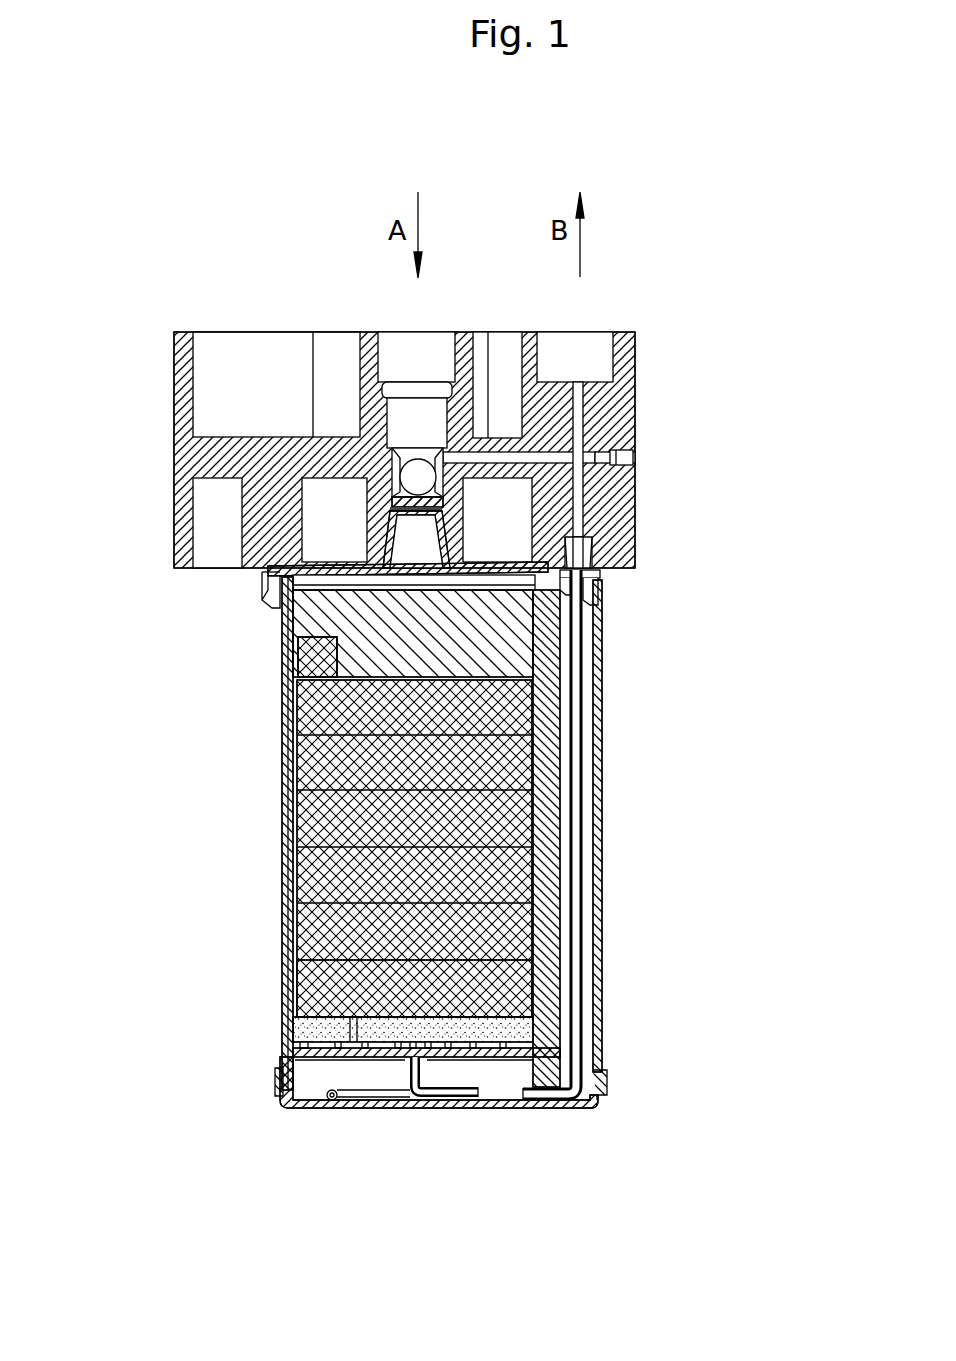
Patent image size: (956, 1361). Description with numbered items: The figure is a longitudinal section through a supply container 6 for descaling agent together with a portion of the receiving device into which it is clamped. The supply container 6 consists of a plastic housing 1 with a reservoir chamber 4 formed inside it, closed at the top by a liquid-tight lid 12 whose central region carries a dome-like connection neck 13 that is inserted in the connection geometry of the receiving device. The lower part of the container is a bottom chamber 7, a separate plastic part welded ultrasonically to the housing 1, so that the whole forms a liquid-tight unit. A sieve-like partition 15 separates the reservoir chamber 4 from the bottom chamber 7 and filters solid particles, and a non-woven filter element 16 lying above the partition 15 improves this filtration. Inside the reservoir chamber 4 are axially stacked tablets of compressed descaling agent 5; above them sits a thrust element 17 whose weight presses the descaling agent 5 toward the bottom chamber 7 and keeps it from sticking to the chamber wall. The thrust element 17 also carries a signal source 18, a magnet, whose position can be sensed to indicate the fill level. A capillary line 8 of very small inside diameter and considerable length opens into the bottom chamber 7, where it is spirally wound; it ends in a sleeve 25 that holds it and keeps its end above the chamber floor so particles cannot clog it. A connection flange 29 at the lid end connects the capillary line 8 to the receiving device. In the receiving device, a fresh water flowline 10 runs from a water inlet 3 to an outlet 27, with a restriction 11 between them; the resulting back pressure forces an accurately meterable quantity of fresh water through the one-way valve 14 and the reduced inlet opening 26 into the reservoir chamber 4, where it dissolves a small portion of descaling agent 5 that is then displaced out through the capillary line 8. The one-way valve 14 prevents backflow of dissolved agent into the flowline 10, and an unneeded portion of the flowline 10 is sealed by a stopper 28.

The housing 1 is at (283, 703).
The water inlet 3 is at (394, 347).
The reservoir chamber 4 is at (286, 920).
The descaling agent 5 is at (292, 800).
The supply container 6 is at (210, 1009).
The bottom chamber 7 is at (305, 1098).
The capillary line 8 is at (581, 762).
The flowline 10 is at (578, 418).
The restriction 11 is at (502, 452).
The lid 12 is at (273, 572).
The connection neck 13 is at (597, 549).
The one-way valve 14 is at (416, 468).
The partition 15 is at (300, 1044).
The filter element 16 is at (505, 1030).
The thrust element 17 is at (503, 648).
The signal source 18 is at (297, 647).
The sleeve 25 is at (430, 1070).
The inlet opening 26 is at (403, 502).
The outlet 27 is at (583, 347).
The stopper 28 is at (632, 457).
The connection flange 29 is at (627, 549).